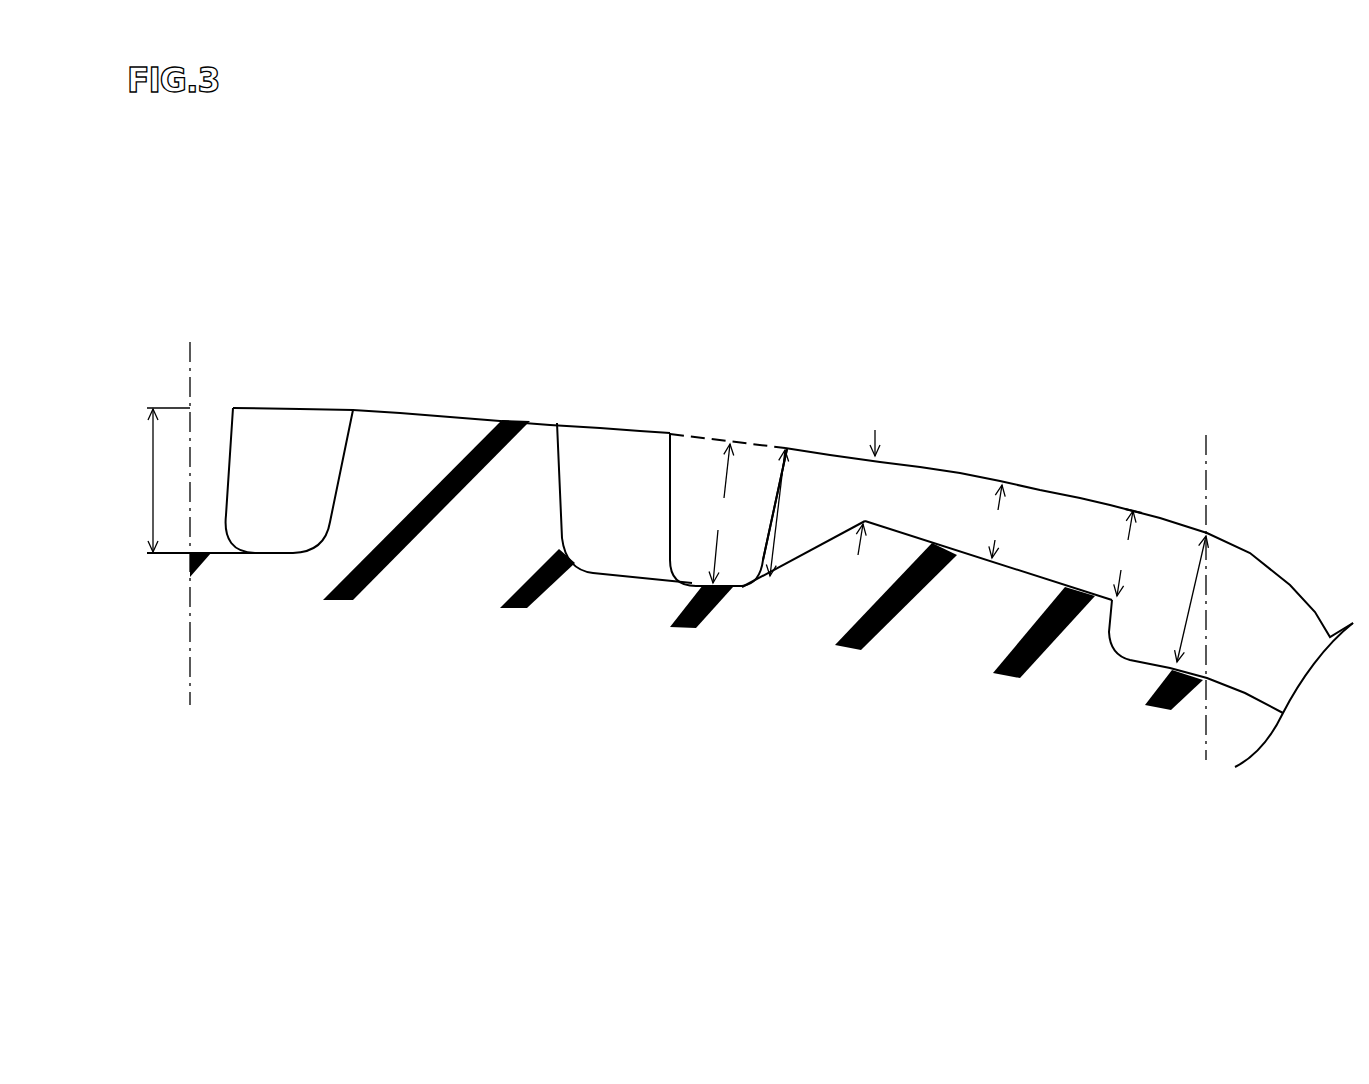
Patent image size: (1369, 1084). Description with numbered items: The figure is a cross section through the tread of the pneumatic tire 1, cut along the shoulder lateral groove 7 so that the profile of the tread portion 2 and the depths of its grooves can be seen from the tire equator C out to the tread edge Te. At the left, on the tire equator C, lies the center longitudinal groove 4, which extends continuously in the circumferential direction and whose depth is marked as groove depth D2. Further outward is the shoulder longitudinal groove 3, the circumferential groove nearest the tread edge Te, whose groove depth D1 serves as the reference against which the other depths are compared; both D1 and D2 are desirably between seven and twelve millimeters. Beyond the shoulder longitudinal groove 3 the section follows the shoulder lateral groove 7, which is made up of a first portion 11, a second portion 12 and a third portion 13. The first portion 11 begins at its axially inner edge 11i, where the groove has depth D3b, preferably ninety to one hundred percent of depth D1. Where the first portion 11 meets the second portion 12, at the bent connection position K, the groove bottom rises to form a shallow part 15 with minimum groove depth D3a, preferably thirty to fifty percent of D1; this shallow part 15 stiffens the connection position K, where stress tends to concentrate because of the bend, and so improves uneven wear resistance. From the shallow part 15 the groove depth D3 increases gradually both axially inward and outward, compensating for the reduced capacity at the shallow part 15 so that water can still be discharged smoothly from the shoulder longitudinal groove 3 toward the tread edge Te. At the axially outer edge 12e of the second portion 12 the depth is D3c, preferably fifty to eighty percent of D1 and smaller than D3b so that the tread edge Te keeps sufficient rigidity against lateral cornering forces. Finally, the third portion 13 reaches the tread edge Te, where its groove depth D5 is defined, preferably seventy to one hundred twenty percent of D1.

The pneumatic tire 1 is at (632, 312).
The tread portion 2 is at (478, 403).
The shoulder longitudinal groove 3 is at (697, 467).
The center longitudinal groove 4 is at (215, 427).
The shoulder lateral groove 7 is at (893, 283).
The first portion 11 is at (825, 483).
The axially inner edge 11i is at (785, 447).
The second portion 12 is at (1030, 508).
The axially outer edge 12e is at (1135, 506).
The third portion 13 is at (1163, 553).
The shallow part 15 is at (865, 522).
The tire equator C is at (191, 510).
The tread edge Te is at (1207, 584).
The connection position K is at (888, 473).
The groove depth of shoulder longitudinal groove D1 is at (722, 513).
The groove depth of center longitudinal groove D2 is at (152, 480).
The groove depth of shoulder lateral groove D3 is at (997, 521).
The minimum groove depth of shallow part D3a is at (868, 492).
The groove depth at axially inner edge D3b is at (772, 545).
The groove depth at axially outer edge D3c is at (1125, 553).
The groove depth of third portion D5 is at (1192, 598).